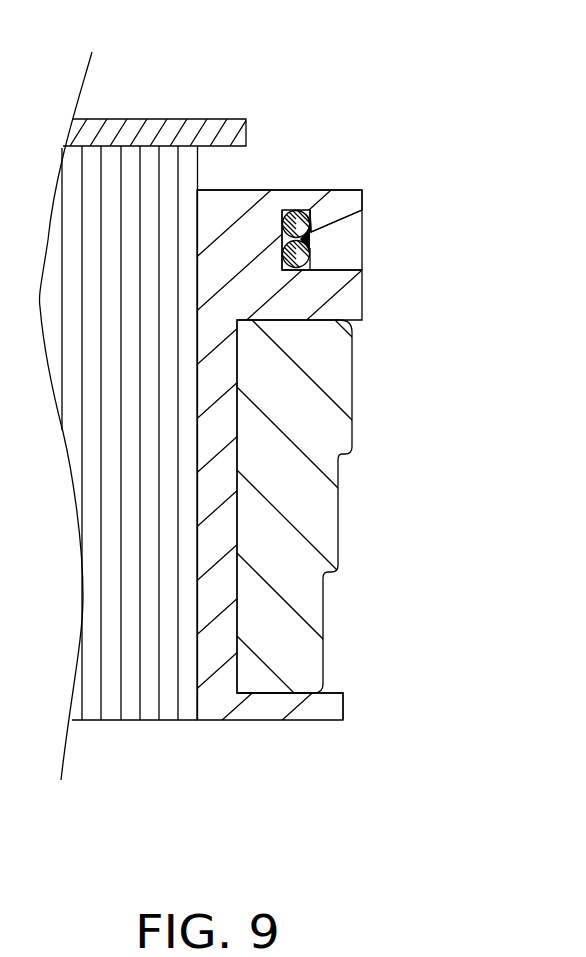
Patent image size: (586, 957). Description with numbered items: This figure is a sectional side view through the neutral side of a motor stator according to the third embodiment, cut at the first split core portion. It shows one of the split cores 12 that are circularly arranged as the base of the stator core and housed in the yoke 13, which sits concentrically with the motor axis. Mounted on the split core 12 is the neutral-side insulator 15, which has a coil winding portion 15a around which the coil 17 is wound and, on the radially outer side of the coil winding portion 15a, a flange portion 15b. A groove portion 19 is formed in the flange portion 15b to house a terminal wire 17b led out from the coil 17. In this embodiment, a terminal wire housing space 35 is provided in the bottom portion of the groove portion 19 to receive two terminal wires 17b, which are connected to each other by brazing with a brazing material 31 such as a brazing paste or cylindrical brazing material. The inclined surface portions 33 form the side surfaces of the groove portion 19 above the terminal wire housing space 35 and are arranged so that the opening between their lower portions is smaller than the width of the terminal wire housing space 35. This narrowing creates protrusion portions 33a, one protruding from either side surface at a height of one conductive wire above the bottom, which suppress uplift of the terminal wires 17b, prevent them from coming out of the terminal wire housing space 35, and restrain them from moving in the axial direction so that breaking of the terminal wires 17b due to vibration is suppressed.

The split core 12 is at (134, 705).
The yoke 13 is at (140, 130).
The neutral-side insulator 15 is at (243, 190).
The coil winding portion 15a is at (250, 705).
The flange portion 15b is at (265, 190).
The coil 17 is at (327, 535).
The terminal wire 17b is at (330, 190).
The groove portion 19 is at (340, 243).
The brazing material 31 is at (318, 245).
The inclined surface portion 33 is at (306, 216).
The protrusion portion 33a is at (312, 224).
The terminal wire housing space 35 is at (292, 270).